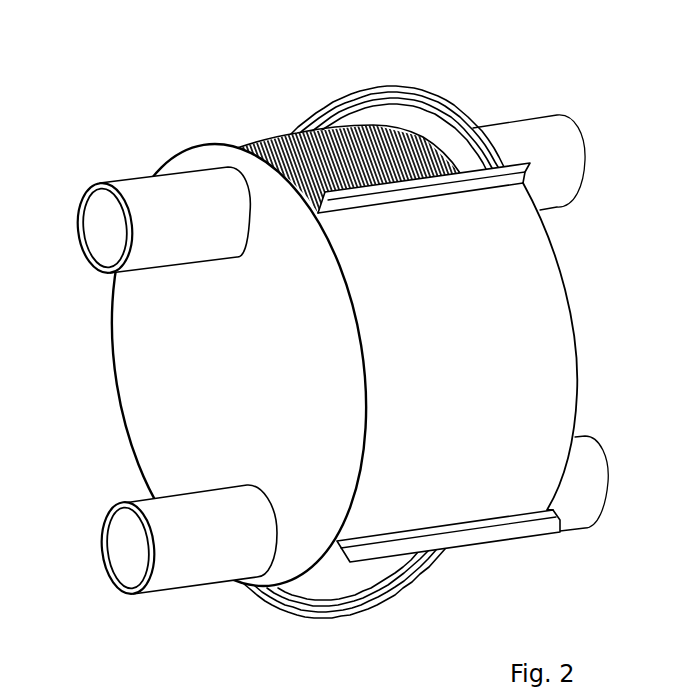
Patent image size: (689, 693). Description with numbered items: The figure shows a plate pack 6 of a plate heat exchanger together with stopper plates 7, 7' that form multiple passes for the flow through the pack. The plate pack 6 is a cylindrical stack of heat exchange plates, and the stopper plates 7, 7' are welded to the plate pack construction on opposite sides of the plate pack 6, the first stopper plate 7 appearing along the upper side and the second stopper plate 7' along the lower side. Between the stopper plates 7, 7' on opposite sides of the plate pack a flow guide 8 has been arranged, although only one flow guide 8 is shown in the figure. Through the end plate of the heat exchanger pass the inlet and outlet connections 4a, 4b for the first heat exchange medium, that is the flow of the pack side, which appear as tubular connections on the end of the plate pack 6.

The inlet connection 4a is at (158, 202).
The outlet connection 4b is at (195, 556).
The plate pack 6 is at (152, 377).
The stopper plate 7 is at (370, 115).
The stopper plate 7' is at (344, 602).
The flow guide 8 is at (533, 302).